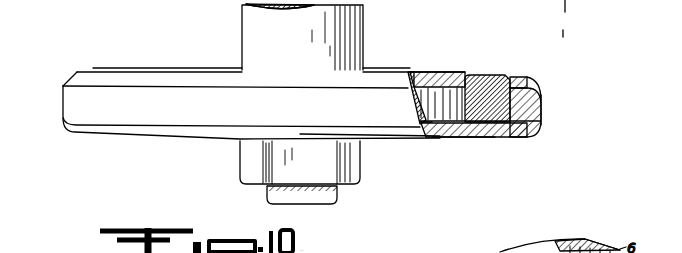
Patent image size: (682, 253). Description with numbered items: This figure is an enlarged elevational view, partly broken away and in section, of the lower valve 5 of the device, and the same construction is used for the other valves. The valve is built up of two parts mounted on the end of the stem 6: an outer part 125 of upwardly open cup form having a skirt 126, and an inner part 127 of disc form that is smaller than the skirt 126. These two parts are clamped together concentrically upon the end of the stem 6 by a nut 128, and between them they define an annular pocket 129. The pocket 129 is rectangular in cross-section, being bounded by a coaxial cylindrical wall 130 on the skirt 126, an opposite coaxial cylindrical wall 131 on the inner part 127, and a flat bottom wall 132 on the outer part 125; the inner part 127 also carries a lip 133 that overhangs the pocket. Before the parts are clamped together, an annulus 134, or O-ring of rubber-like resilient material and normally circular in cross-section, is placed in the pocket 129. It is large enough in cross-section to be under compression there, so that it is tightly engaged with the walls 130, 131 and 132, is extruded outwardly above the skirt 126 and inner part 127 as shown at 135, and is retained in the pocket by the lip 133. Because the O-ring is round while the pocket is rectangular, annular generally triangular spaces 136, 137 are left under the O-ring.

The lower valve 5 is at (165, 90).
The stem 6 is at (363, 25).
The outer part 125 is at (430, 145).
The skirt 126 is at (540, 100).
The inner part 127 is at (431, 56).
The nut 128 is at (252, 165).
The annular pocket 129 is at (517, 138).
The coaxial cylindrical wall 130 is at (533, 85).
The opposite coaxial cylindrical wall 131 is at (443, 139).
The flat bottom wall 132 is at (480, 140).
The lip 133 is at (475, 77).
The annulus 134 is at (543, 88).
The extruded portion 135 is at (503, 73).
The annular generally triangular space 136 is at (537, 122).
The annular generally triangular space 137 is at (460, 139).